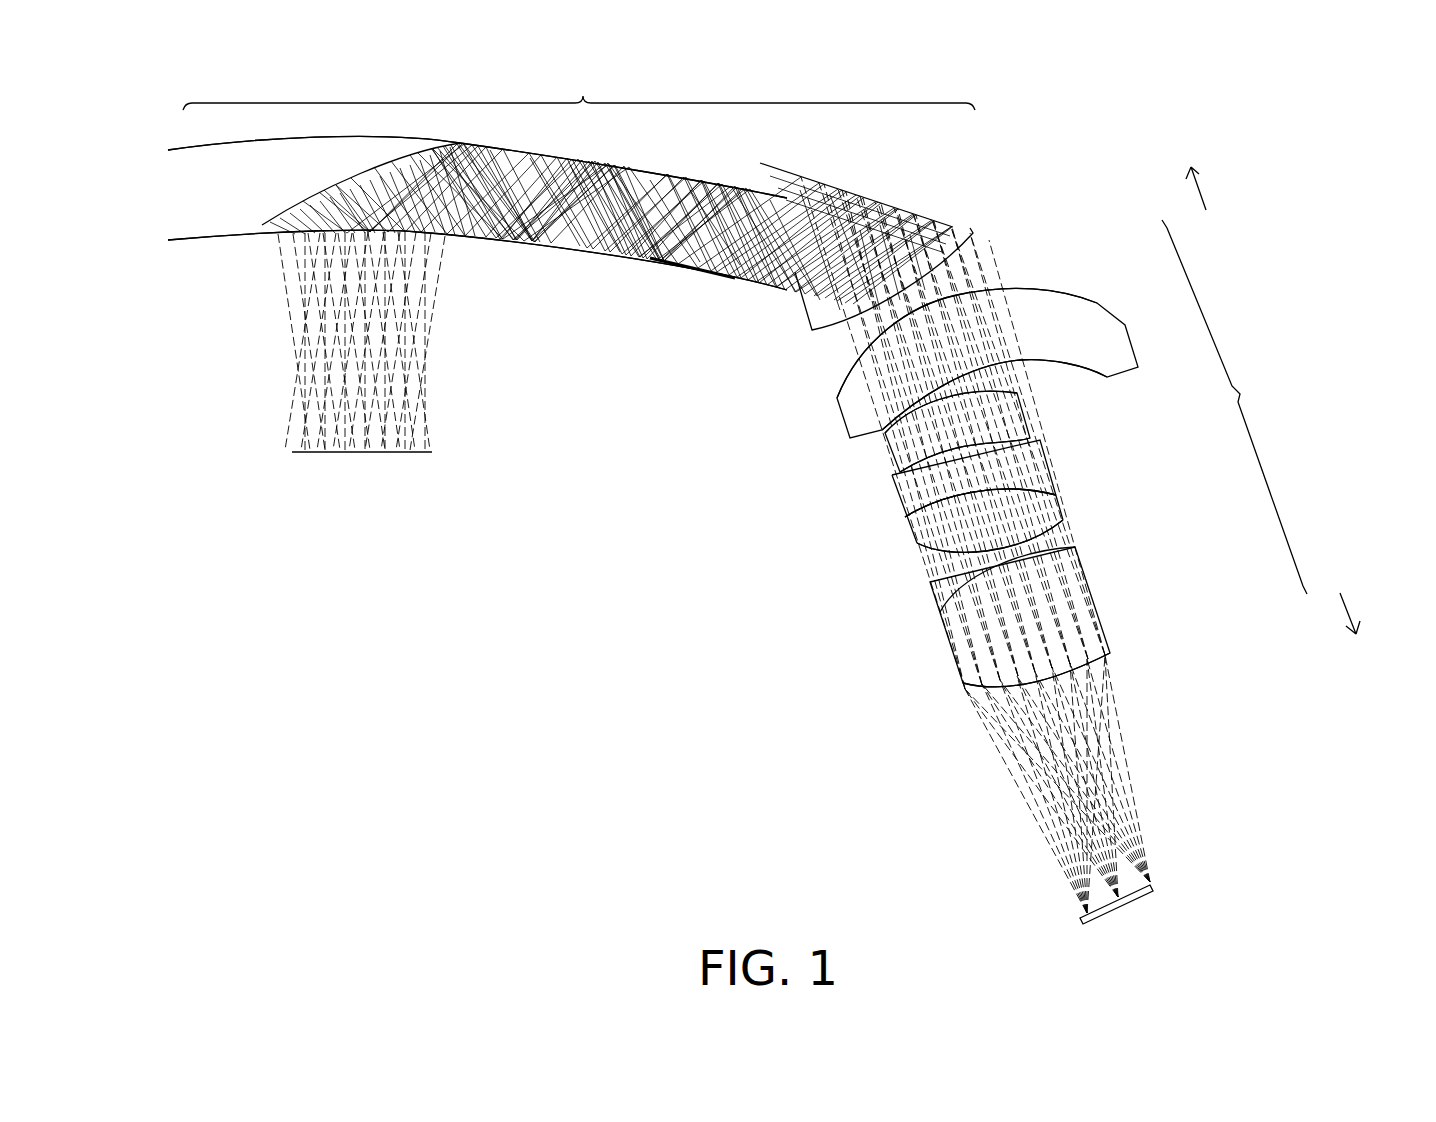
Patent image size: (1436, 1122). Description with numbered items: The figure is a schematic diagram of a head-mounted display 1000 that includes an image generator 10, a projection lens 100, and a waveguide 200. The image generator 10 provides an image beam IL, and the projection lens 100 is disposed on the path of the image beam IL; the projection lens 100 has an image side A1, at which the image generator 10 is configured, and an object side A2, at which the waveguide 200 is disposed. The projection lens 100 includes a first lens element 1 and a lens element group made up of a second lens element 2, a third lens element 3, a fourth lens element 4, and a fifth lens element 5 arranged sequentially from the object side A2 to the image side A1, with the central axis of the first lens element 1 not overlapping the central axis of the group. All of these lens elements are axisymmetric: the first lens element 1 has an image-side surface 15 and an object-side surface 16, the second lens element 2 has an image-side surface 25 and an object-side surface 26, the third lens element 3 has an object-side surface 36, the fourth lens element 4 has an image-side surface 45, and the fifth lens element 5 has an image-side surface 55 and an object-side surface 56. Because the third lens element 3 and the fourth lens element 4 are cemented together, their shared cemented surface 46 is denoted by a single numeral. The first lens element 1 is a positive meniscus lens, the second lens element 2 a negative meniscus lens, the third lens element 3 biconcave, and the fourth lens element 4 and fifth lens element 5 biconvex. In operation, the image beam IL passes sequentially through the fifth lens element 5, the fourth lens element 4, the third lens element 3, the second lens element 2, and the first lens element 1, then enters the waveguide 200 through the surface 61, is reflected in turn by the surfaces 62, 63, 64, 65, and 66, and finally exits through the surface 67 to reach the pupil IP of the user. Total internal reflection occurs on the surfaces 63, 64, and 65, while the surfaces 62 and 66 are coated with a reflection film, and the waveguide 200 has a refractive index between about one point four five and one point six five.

The head-mounted display 1000 is at (1378, 928).
The waveguide 200 is at (571, 186).
The optical surface 64 is at (542, 152).
The optical surface 65 is at (483, 238).
The optical surface 66 is at (363, 175).
The optical surface 67 is at (342, 238).
The optical surface 61 is at (953, 223).
The optical surface 62 is at (825, 188).
The optical surface 63 is at (685, 265).
The first lens element 1 is at (1097, 303).
The image-side surface 15 is at (882, 405).
The object-side surface 16 is at (850, 363).
The second lens element 2 is at (1027, 420).
The image-side surface 25 is at (913, 455).
The object-side surface 26 is at (895, 458).
The third lens element 3 is at (1053, 462).
The object-side surface 36 is at (913, 513).
The fourth lens element 4 is at (1067, 500).
The image-side surface 45 is at (937, 560).
The cemented surface 46 is at (927, 553).
The fifth lens element 5 is at (1097, 593).
The image-side surface 55 is at (980, 687).
The object-side surface 56 is at (958, 597).
The image beam IL is at (1030, 812).
The image generator 10 is at (1050, 902).
The projection lens 100 is at (1234, 407).
The pupil IP is at (353, 455).
The image side A1 is at (1377, 613).
The object side A2 is at (1217, 185).